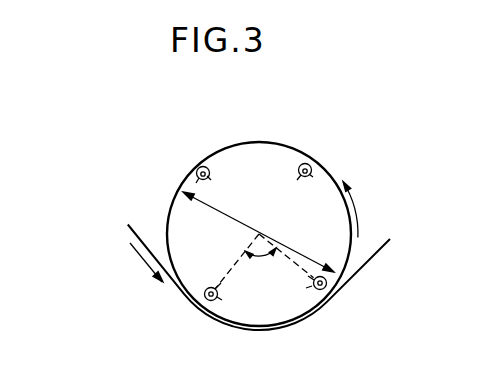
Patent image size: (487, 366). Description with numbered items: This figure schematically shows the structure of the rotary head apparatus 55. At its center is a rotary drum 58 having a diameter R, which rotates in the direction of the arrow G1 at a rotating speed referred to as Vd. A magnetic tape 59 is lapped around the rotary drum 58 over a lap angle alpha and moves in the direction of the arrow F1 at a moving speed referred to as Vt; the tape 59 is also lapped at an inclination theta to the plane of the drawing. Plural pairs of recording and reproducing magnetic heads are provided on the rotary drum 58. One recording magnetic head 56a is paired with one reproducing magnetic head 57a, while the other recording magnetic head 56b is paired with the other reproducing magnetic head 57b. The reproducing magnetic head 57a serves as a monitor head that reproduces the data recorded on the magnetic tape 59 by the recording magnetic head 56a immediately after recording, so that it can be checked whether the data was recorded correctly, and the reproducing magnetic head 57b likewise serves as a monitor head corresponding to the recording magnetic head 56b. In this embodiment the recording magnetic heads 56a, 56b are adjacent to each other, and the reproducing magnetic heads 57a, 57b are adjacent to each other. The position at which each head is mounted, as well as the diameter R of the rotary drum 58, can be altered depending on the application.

The rotary head apparatus 55 is at (380, 130).
The recording magnetic head 56a is at (190, 310).
The recording magnetic head 56b is at (197, 170).
The reproducing magnetic head 57a is at (310, 164).
The reproducing magnetic head 57b is at (330, 298).
The rotary drum 58 is at (245, 157).
The magnetic tape 59 is at (358, 276).
The arrow indicating tape moving direction F1 is at (142, 262).
The arrow indicating drum rotating direction G1 is at (355, 222).
The diameter of rotary drum R is at (222, 212).